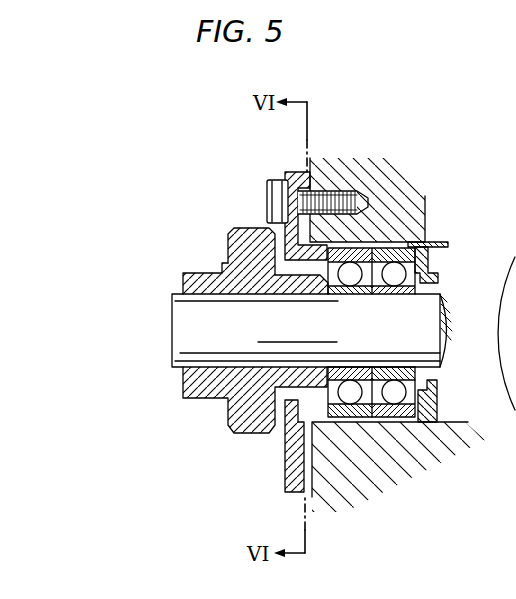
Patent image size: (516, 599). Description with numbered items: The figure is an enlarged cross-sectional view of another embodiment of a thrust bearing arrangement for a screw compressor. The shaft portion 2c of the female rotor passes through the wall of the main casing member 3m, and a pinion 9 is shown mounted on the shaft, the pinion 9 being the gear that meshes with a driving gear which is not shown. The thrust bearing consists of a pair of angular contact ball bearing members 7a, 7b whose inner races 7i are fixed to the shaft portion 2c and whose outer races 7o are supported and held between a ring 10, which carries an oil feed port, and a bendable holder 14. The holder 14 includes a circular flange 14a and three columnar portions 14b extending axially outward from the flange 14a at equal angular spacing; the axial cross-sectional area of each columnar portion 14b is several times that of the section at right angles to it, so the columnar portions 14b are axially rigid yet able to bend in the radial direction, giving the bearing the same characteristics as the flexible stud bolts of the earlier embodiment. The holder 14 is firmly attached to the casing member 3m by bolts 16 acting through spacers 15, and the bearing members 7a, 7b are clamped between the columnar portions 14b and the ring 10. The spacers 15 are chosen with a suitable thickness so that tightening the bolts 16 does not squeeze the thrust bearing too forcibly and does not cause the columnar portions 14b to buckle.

The shaft portion 2c is at (172, 352).
The pinion 9 is at (227, 418).
The holder 14 is at (291, 164).
The circular flange 14a is at (275, 240).
The columnar portion 14b is at (298, 276).
The spacer 15 is at (316, 173).
The bolt 16 is at (266, 200).
The outer race 7o is at (398, 248).
The inner race 7i is at (384, 367).
The angular contact ball bearing member 7a is at (395, 418).
The angular contact ball bearing member 7b is at (355, 418).
The ring 10 is at (441, 242).
The main casing member 3m is at (388, 472).